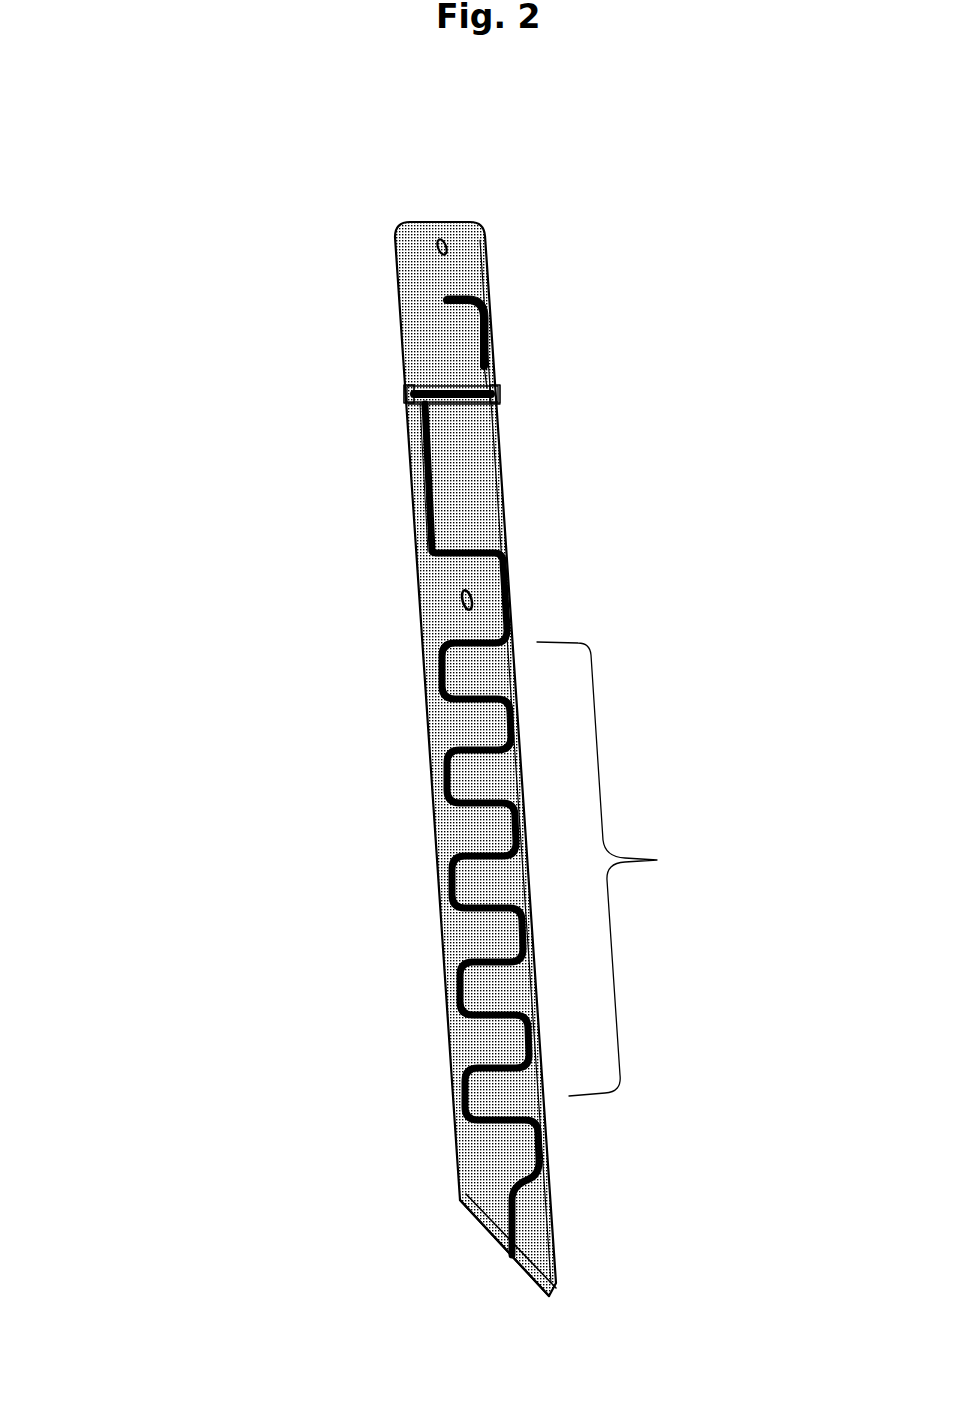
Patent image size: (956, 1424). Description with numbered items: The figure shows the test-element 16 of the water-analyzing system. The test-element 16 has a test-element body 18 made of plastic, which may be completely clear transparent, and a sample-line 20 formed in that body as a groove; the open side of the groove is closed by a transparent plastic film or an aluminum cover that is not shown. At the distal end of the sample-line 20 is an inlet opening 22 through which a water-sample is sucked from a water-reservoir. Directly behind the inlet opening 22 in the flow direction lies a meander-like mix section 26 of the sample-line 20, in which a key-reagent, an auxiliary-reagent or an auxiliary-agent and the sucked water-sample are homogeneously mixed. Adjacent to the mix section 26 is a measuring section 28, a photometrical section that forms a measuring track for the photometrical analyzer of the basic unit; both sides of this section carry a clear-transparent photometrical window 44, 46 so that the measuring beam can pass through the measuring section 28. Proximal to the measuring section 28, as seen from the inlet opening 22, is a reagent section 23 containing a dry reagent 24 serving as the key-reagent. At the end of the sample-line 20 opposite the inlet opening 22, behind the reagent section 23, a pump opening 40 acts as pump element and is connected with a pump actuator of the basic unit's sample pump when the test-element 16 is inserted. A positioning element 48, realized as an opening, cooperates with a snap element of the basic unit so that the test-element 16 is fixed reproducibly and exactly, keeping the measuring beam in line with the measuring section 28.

The test-element 16 is at (364, 493).
The test-element body 18 is at (483, 505).
The sample-line 20 is at (452, 728).
The inlet opening 22 is at (517, 1258).
The reagent section 23 is at (456, 324).
The dry reagent 24 is at (483, 353).
The meander-like mix section 26 is at (626, 869).
The measuring section 28 is at (460, 428).
The pump opening 40 is at (462, 297).
The photometrical window 44 is at (405, 392).
The photometrical window 46 is at (499, 385).
The positioning element 48 is at (444, 246).